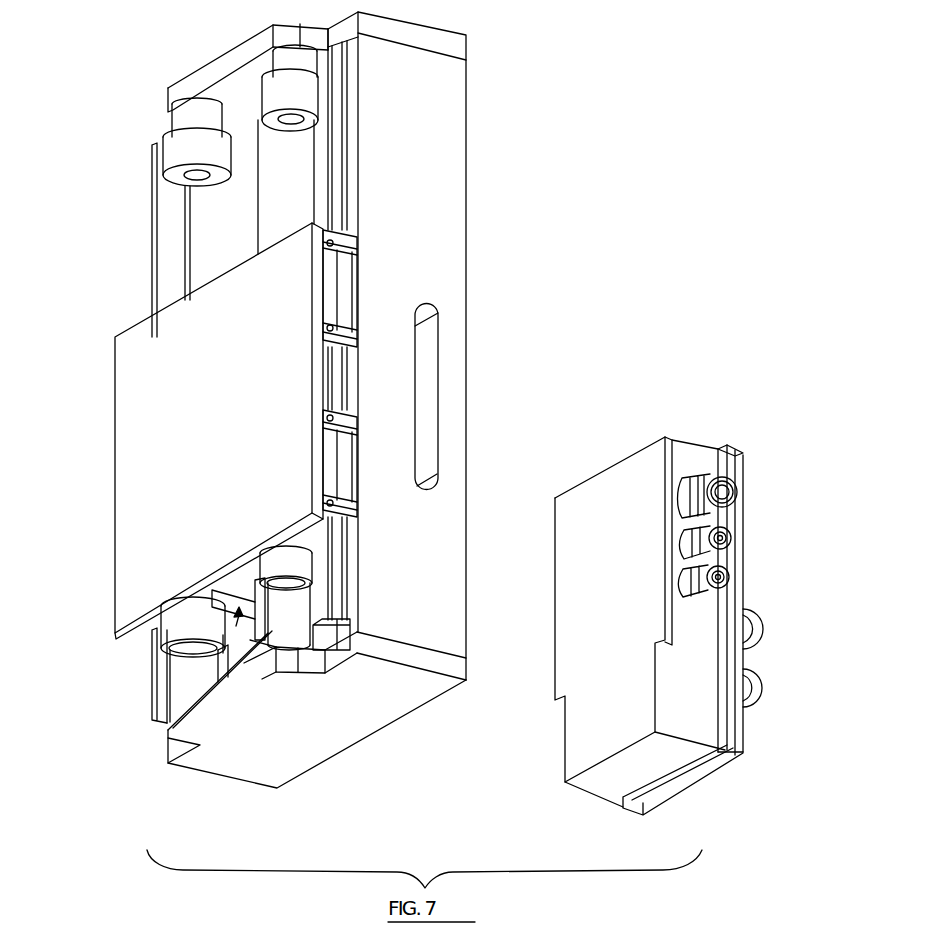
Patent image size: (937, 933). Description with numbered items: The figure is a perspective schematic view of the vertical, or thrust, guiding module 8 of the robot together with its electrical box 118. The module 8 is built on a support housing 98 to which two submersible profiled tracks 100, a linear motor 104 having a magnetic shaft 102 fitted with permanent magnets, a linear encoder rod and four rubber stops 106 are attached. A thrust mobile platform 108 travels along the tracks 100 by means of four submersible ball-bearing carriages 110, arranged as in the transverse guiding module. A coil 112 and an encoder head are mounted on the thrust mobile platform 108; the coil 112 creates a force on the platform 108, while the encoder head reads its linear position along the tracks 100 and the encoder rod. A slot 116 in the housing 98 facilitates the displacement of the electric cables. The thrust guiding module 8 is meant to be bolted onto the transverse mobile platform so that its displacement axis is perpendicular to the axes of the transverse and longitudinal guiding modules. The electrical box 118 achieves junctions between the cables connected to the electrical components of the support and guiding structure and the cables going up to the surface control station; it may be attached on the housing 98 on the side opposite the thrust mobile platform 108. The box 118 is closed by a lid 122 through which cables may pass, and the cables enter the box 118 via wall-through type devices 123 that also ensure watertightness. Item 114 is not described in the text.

The thrust guiding module 8 is at (133, 101).
The support housing 98 is at (450, 182).
The submersible profiled tracks 100 is at (149, 710).
The magnetic shaft 102 is at (263, 207).
The linear motor 104 is at (296, 218).
The rubber stops 106 is at (218, 150).
The thrust mobile platform 108 is at (123, 365).
The submersible ball-bearing carriages 110 is at (345, 454).
The coil 112 is at (165, 655).
The stop member 114 is at (233, 590).
The slot 116 is at (438, 397).
The electrical box 118 is at (688, 424).
The lid 122 is at (740, 763).
The wall-through type devices 123 is at (748, 612).